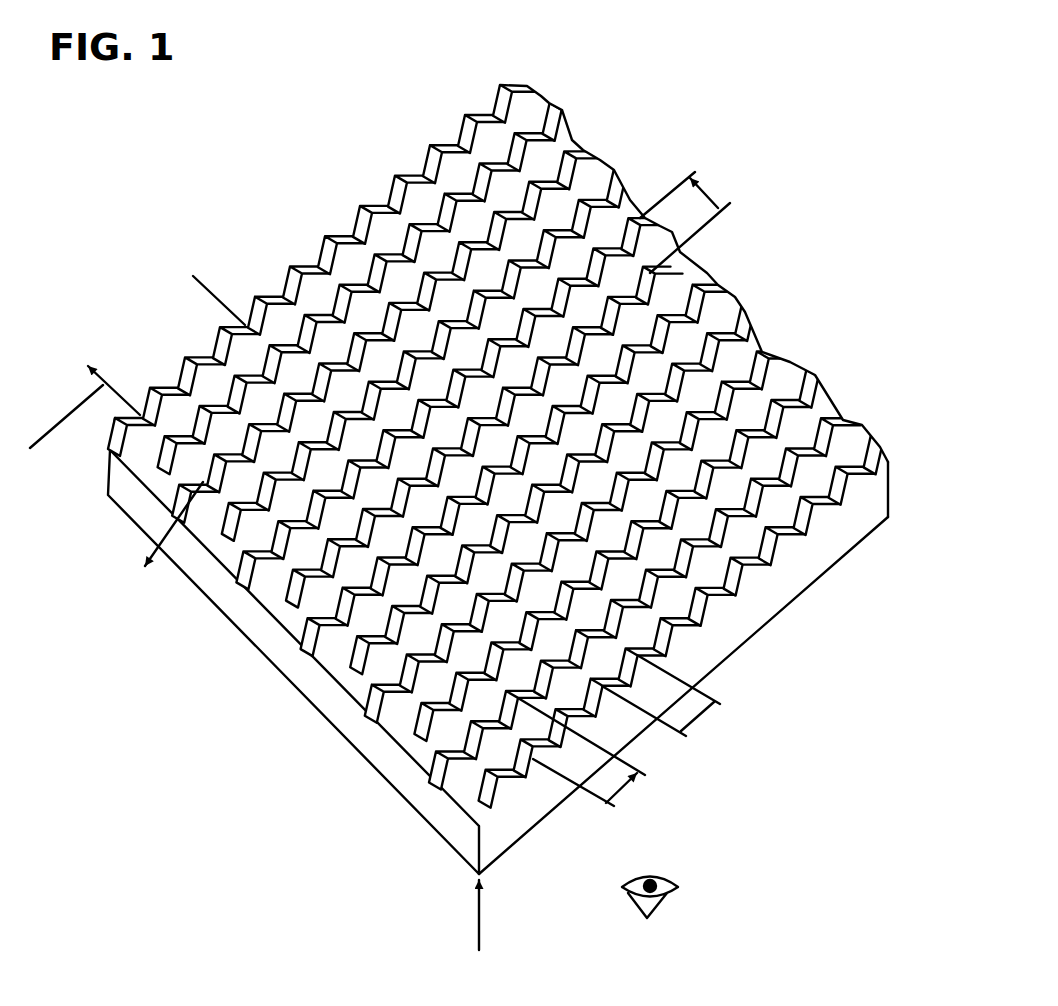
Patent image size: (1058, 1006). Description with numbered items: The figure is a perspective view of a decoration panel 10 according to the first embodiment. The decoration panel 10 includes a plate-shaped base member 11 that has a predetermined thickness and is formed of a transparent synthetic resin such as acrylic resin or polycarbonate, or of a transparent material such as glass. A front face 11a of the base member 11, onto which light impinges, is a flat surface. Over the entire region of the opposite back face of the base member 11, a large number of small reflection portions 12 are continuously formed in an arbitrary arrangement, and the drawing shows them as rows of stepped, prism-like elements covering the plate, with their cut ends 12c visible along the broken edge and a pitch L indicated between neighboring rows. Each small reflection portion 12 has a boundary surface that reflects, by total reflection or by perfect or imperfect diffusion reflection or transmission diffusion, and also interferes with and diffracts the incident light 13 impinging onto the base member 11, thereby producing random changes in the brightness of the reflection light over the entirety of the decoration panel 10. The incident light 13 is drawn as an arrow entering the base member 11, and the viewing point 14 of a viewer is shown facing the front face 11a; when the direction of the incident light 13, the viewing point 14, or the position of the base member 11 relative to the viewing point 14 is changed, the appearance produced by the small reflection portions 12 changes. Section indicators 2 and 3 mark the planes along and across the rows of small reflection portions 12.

The decoration panel 10 is at (486, 479).
The base member 11 is at (330, 720).
The front face 11a is at (792, 602).
The small reflection portions 12 is at (335, 300).
The end faces of prism rows 12c is at (815, 371).
The incident light 13 is at (482, 910).
The viewing point 14 is at (665, 908).
The section line 2- 2 is at (158, 330).
The section line 3- 3 is at (106, 491).
The prism row pitch L is at (624, 492).